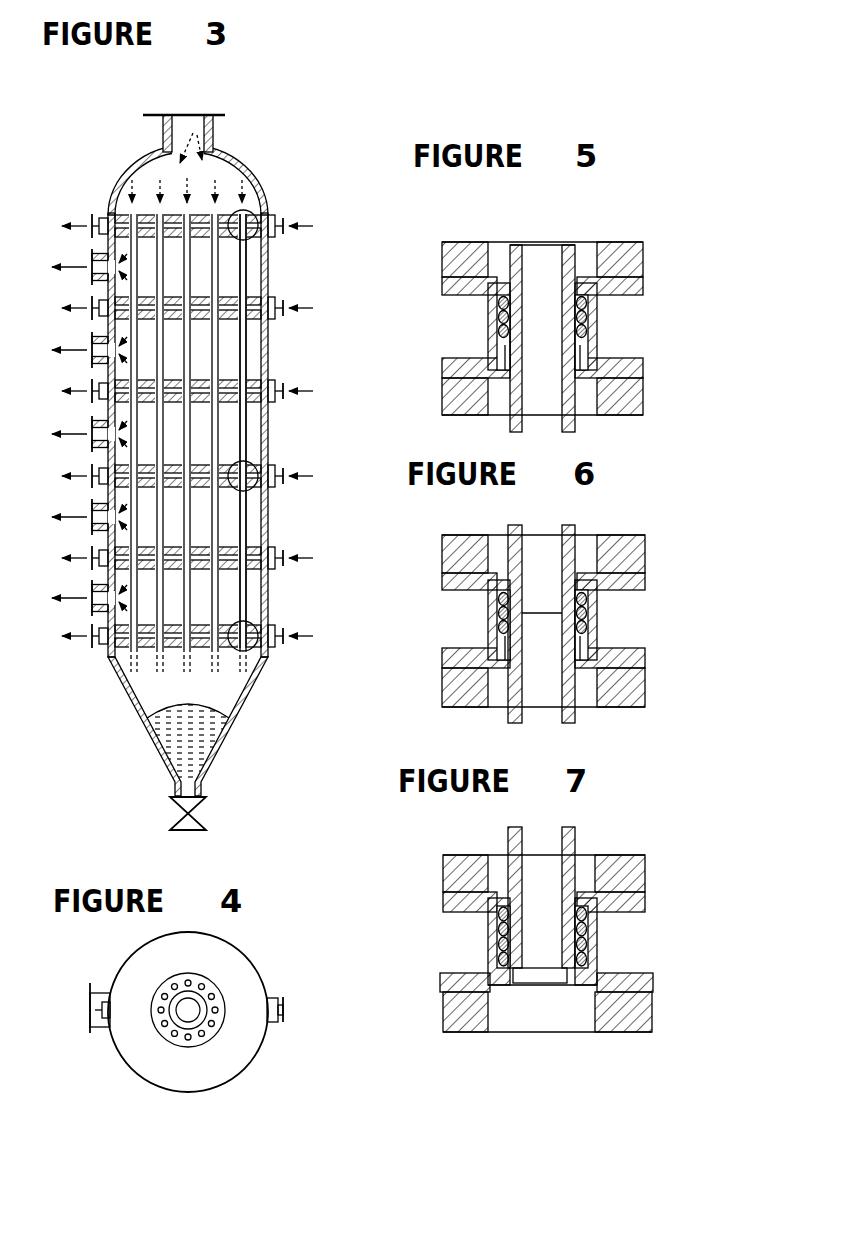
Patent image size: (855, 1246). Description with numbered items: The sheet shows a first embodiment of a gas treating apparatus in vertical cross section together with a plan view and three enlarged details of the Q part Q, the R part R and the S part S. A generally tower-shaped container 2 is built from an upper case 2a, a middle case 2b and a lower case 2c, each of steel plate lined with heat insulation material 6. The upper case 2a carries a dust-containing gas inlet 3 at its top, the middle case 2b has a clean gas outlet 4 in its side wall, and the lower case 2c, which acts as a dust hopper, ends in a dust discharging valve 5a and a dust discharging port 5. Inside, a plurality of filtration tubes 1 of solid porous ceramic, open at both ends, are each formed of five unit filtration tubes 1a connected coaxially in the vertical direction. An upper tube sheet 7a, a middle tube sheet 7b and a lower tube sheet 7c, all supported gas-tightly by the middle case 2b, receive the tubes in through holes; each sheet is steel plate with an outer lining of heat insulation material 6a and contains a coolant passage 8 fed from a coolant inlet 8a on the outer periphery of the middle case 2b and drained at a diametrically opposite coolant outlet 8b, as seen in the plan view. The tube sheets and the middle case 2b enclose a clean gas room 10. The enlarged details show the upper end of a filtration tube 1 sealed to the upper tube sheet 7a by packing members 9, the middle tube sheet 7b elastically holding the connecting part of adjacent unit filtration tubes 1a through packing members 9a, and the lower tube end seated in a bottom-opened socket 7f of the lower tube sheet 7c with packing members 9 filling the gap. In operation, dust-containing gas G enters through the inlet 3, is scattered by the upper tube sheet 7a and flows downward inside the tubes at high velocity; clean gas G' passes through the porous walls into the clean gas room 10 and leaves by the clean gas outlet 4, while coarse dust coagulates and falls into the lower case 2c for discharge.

In FIG. 3, the filtration tube 1 is at (247, 333).
In FIG. 5, the filtration tube 1 is at (571, 257).
In FIG. 7, the filtration tube 1 is at (571, 868).
In FIG. 3, the unit filtration tube 1a is at (246, 278).
In FIG. 6, the unit filtration tube 1a is at (568, 552).
In FIG. 3, the container 2 is at (277, 264).
In FIG. 4, the container 2 is at (188, 1012).
In FIG. 3, the upper case 2a is at (241, 158).
In FIG. 3, the middle case 2b is at (268, 417).
In FIG. 3, the lower case 2c is at (252, 688).
In FIG. 3, the dust-containing gas inlet 3 is at (201, 114).
In FIG. 4, the dust-containing gas inlet 3 is at (203, 1003).
In FIG. 3, the clean gas outlet 4 is at (90, 350).
In FIG. 4, the clean gas outlet 4 is at (90, 1022).
In FIG. 3, the dust discharging port 5 is at (200, 786).
In FIG. 3, the dust discharging valve 5a is at (207, 826).
In FIG. 3, the heat insulation material 6 is at (263, 178).
In FIG. 3, the heat insulation material 6a is at (252, 548).
In FIG. 5, the heat insulation material 6a is at (624, 258).
In FIG. 6, the heat insulation material 6a is at (631, 555).
In FIG. 7, the heat insulation material 6a is at (618, 873).
In FIG. 3, the upper tube sheet 7a is at (152, 215).
In FIG. 5, the upper tube sheet 7a is at (628, 290).
In FIG. 3, the middle tube sheet 7b is at (128, 514).
In FIG. 6, the middle tube sheet 7b is at (628, 582).
In FIG. 3, the lower tube sheet 7c is at (145, 655).
In FIG. 7, the lower tube sheet 7c is at (626, 902).
In FIG. 7, the socket 7f is at (580, 986).
In FIG. 3, the coolant passage 8 is at (228, 392).
In FIG. 5, the coolant passage 8 is at (624, 327).
In FIG. 6, the coolant passage 8 is at (624, 622).
In FIG. 7, the coolant passage 8 is at (626, 937).
In FIG. 3, the coolant inlet 8a is at (276, 482).
In FIG. 4, the coolant inlet 8a is at (283, 1002).
In FIG. 3, the coolant outlet 8b is at (92, 474).
In FIG. 4, the coolant outlet 8b is at (90, 1007).
In FIG. 5, the packing member 9 is at (587, 338).
In FIG. 7, the packing member 9 is at (584, 947).
In FIG. 6, the packing member 9a is at (582, 632).
In FIG. 3, the clean gas room 10 is at (254, 507).
In FIG. 3, the Q part Q is at (256, 206).
In FIG. 3, the R part R is at (283, 474).
In FIG. 3, the S part S is at (252, 620).
In FIG. 3, the dust-containing gas G is at (187, 126).
In FIG. 3, the clean gas G' is at (38, 265).